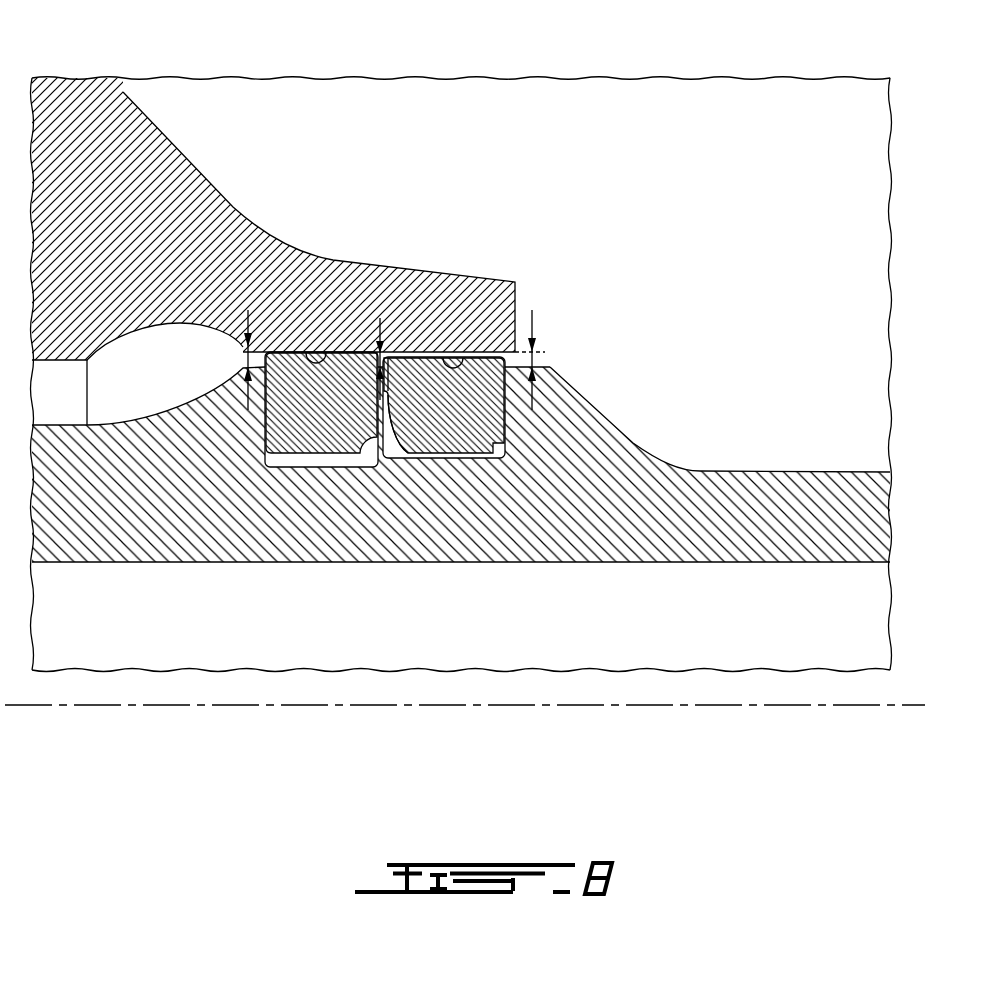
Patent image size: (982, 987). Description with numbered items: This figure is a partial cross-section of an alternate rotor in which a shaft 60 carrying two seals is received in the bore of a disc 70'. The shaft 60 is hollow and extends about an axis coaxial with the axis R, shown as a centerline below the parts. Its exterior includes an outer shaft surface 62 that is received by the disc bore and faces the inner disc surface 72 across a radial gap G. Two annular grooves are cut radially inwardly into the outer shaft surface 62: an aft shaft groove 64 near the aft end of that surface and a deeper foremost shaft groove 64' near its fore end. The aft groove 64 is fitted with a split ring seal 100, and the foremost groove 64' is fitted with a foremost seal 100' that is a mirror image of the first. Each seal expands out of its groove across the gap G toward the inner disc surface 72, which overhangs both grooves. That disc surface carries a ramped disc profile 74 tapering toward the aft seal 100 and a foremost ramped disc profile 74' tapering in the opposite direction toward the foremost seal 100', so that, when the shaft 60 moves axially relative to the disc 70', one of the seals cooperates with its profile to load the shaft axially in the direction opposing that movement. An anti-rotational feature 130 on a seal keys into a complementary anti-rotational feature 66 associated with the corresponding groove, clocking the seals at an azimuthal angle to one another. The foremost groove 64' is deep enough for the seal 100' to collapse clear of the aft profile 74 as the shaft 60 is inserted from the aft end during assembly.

The disc 70' is at (273, 184).
The shaft 60 is at (797, 512).
The outer shaft surface 62 is at (548, 363).
The inner disc surface 72 is at (365, 352).
The shaft groove 64 is at (459, 483).
The foremost shaft groove 64' is at (325, 481).
The anti-rotational feature 66 is at (413, 400).
The seal 100 is at (444, 484).
The foremost seal 100' is at (321, 481).
The anti-rotational feature 130 is at (387, 357).
The ramped disc profile 74 is at (466, 297).
The foremost ramped disc profile 74' is at (325, 273).
The gap G is at (243, 355).
The axis R is at (463, 706).